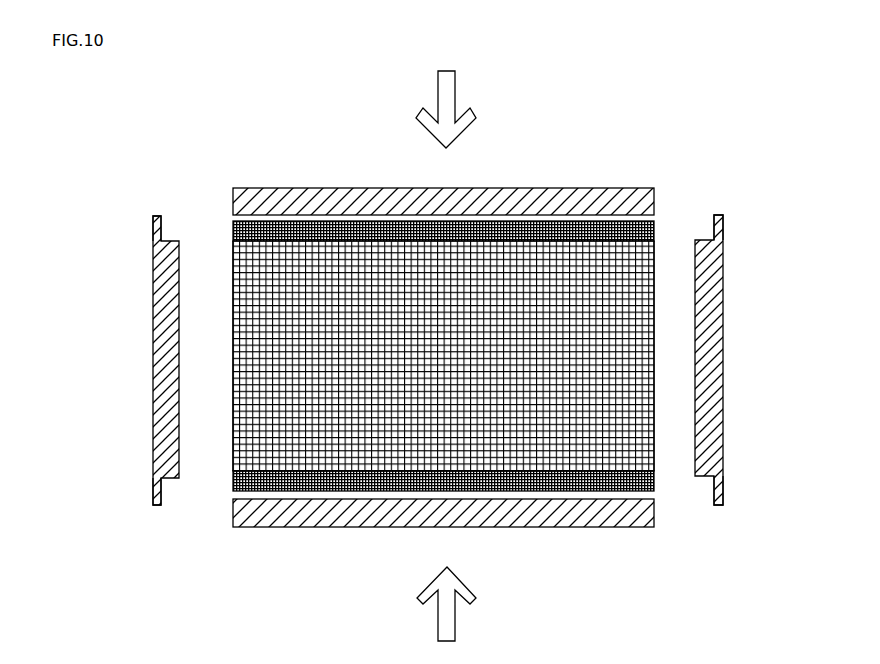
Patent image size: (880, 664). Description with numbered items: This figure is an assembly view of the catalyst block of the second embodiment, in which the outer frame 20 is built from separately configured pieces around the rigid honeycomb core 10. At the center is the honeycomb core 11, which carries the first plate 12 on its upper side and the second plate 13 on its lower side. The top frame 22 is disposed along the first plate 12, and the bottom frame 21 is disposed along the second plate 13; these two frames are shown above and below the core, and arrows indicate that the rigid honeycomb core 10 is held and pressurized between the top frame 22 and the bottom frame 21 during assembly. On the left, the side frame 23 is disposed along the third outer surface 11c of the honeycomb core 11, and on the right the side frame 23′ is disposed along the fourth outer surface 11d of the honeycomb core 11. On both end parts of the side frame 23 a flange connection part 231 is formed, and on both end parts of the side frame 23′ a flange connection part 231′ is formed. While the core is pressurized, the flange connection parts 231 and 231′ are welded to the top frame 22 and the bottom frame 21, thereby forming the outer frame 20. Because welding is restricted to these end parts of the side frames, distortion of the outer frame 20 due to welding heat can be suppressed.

The rigid honeycomb core 10 is at (457, 330).
The honeycomb core 11 is at (230, 355).
The third outer surface 11c is at (225, 323).
The fourth outer surface 11d is at (646, 325).
The first plate 12 is at (226, 227).
The second plate 13 is at (226, 477).
The outer frame 20 is at (442, 354).
The bottom frame 21 is at (570, 503).
The top frame 22 is at (580, 187).
The side frame 23 is at (152, 343).
The side frame 23′ is at (710, 342).
The flange connection part 231 is at (147, 222).
The flange connection part 231′ is at (713, 222).